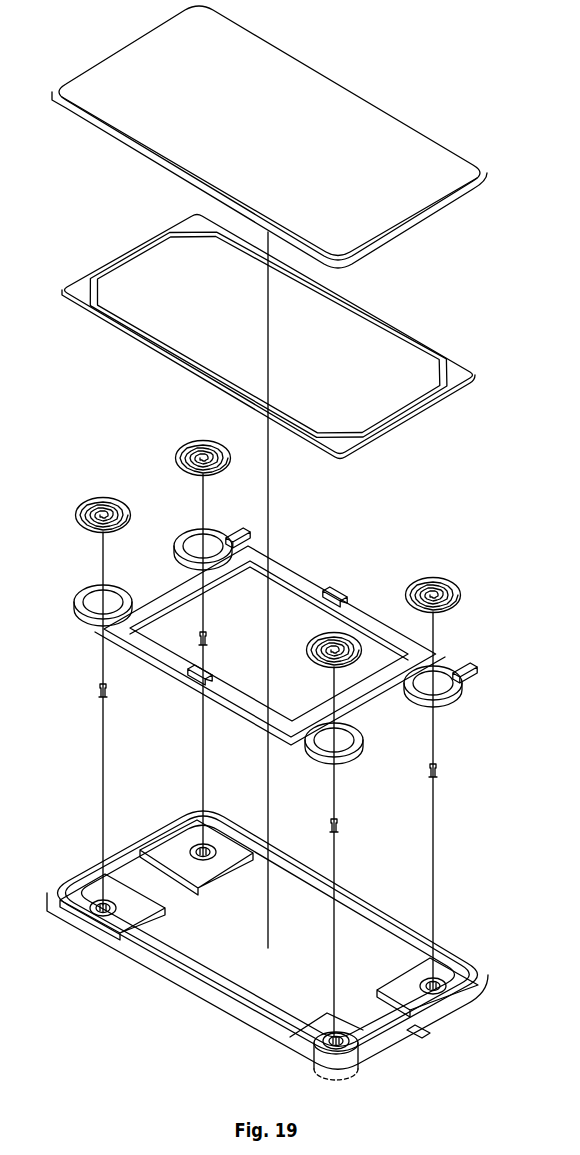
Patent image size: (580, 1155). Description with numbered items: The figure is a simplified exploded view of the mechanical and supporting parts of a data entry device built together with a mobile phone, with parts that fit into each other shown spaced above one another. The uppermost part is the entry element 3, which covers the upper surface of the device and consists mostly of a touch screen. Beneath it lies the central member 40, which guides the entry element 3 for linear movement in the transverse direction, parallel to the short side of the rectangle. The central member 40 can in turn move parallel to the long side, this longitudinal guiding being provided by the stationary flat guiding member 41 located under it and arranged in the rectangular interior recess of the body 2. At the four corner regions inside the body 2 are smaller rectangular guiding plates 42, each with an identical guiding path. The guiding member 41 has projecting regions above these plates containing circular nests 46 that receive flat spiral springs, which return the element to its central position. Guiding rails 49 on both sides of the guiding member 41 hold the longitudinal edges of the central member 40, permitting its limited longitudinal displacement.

The body 2 is at (267, 945).
The entry element 3 is at (326, 92).
The central member 40 is at (447, 368).
The guiding member 41 is at (275, 638).
The guiding plate 42 is at (145, 908).
The circular nest 46 is at (425, 690).
The guiding rail 49 is at (195, 688).